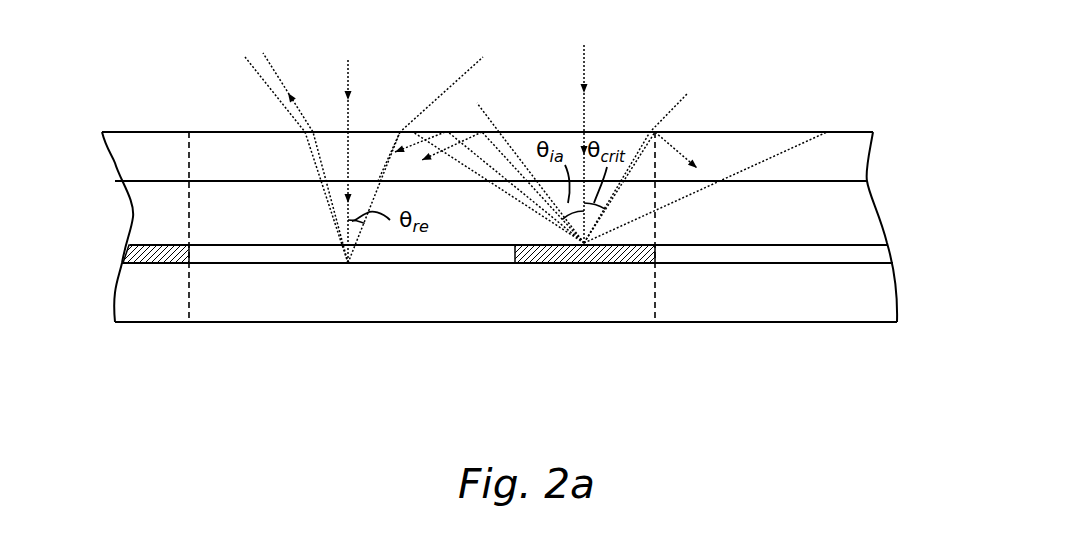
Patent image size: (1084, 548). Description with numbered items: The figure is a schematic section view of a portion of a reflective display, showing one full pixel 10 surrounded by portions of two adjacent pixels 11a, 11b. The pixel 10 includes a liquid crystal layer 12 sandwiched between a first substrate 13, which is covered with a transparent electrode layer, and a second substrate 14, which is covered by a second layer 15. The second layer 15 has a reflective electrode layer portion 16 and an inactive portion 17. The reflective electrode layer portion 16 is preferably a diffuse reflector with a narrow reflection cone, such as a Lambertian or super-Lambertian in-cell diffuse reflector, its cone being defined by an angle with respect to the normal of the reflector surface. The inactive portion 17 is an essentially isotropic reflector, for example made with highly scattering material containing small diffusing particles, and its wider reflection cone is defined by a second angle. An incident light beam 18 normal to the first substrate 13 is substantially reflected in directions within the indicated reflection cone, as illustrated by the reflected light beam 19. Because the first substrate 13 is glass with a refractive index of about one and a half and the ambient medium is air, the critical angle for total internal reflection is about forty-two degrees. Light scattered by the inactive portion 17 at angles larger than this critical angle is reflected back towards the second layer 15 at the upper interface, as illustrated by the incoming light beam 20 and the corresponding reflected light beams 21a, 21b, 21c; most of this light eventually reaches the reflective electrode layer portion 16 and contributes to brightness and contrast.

The pixel 10 is at (189, 343).
The adjacent pixel 11a is at (150, 341).
The adjacent pixel 11b is at (717, 343).
The liquid crystal layer 12 is at (225, 213).
The first substrate 13 is at (243, 160).
The second substrate 14 is at (255, 307).
The second layer 15 is at (892, 253).
The reflective electrode layer portion 16 is at (307, 252).
The inactive portion 17 is at (545, 255).
The incident light beam 18 is at (348, 80).
The reflected light beam 19 is at (277, 72).
The incoming light beam 20 is at (587, 68).
The reflected light beam 21a is at (489, 168).
The reflected light beam 21b is at (502, 150).
The reflected light beam 21c is at (682, 137).